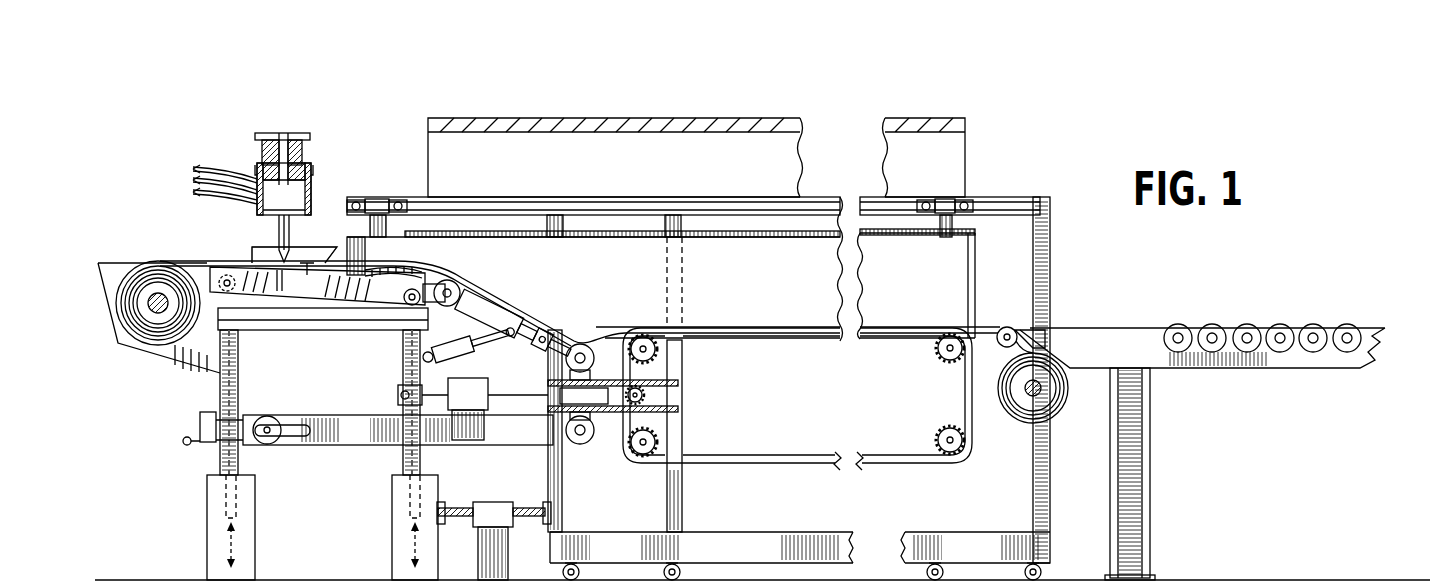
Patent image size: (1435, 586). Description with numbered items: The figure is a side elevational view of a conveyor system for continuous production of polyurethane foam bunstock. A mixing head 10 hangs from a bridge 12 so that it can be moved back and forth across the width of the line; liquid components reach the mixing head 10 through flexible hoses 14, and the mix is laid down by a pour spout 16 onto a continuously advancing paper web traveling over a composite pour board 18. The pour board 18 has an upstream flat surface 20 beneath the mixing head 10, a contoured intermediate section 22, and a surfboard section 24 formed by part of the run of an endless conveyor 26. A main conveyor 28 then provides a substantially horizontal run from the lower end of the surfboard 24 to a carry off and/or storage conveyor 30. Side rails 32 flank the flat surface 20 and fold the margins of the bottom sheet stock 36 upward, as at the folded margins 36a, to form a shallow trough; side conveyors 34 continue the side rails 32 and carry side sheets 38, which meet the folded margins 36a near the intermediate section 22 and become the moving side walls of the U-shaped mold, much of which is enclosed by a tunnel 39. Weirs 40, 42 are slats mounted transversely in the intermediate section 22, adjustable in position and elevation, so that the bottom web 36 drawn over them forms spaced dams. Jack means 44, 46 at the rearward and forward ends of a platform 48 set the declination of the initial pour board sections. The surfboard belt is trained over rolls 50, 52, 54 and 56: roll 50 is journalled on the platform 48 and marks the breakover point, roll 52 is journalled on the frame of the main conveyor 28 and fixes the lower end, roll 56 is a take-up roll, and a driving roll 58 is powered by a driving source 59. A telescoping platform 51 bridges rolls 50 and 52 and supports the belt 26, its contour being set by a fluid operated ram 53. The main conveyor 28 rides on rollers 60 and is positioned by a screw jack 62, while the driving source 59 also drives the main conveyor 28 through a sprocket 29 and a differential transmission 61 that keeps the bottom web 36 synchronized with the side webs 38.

The mixing head 10 is at (300, 195).
The bridge 12 is at (298, 132).
The flexible hoses 14 is at (182, 158).
The pour spout 16 is at (280, 222).
The composite pour board 18 is at (200, 224).
The flat surface 20 is at (288, 287).
The contoured intermediate section 22 is at (383, 275).
The surfboard section 24 is at (516, 298).
The endless conveyor 26 is at (354, 406).
The main conveyor 28 is at (779, 447).
The sprocket 29 is at (645, 397).
The carry off and/or storage conveyor 30 is at (1162, 316).
The side rails 32 is at (263, 249).
The side conveyors 34 is at (487, 232).
The sheet stock 36 is at (155, 282).
The folded margins 36a is at (307, 263).
The side sheets 38 is at (367, 255).
The tunnel 39 is at (620, 170).
The weir 40 is at (370, 272).
The weir 42 is at (418, 276).
The jack means 44 is at (257, 525).
The jack means 46 is at (392, 520).
The platform 48 is at (277, 285).
The roll 50 is at (453, 283).
The telescoping platform 51 is at (487, 307).
The roll 52 is at (567, 357).
The fluid operated ram 53 is at (463, 350).
The roll 54 is at (582, 443).
The take-up roll 56 is at (265, 415).
The driving roll 58 is at (405, 393).
The driving source 59 is at (478, 406).
The rollers 60 is at (577, 566).
The differential transmission 61 is at (562, 400).
The screw jack 62 is at (490, 507).